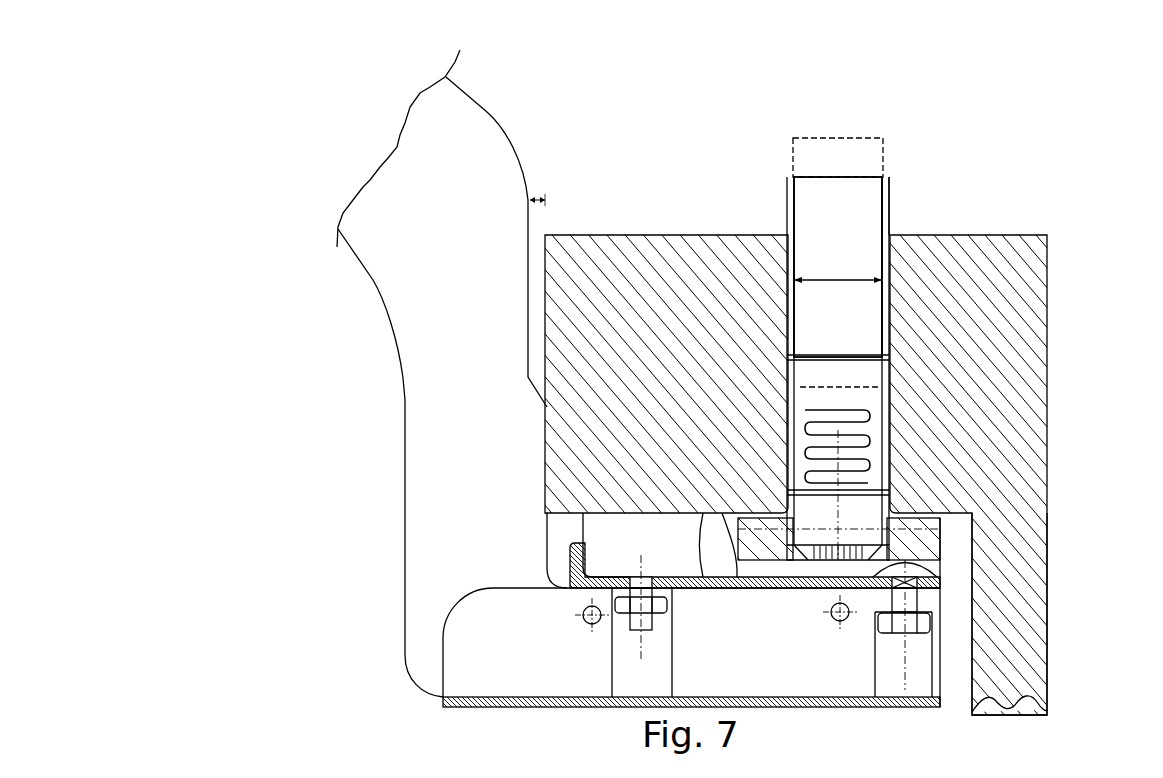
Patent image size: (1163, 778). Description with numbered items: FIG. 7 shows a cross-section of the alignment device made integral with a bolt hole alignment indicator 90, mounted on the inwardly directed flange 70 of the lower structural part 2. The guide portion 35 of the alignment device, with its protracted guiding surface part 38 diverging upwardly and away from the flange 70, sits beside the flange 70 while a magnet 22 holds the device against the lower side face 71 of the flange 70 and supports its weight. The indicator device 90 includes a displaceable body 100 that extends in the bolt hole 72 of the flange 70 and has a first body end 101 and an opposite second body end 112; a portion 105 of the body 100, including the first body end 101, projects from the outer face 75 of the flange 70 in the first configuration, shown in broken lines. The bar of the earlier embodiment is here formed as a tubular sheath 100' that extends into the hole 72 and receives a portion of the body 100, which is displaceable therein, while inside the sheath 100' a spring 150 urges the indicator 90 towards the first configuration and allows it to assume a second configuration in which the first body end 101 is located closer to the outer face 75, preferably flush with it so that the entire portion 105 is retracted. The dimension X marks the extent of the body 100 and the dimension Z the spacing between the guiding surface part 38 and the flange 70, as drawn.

The structural part 2 is at (1055, 616).
The magnet 22 is at (642, 550).
The guide portion 35 is at (442, 373).
The guiding surface part 38 is at (487, 112).
The flange 70 is at (1050, 283).
The lower side face 71 is at (712, 582).
The hole 72 is at (890, 236).
The outer face 75 is at (643, 236).
The bolt hole alignment indicator 90 is at (897, 150).
The body 100 is at (838, 267).
The tubular sheath 100' is at (956, 457).
The first body end 101 is at (830, 177).
The portion of the body 105 is at (784, 207).
The second body end 112 is at (850, 410).
The spring 150 is at (890, 443).
The dimension X is at (838, 271).
The dimension Z is at (537, 192).